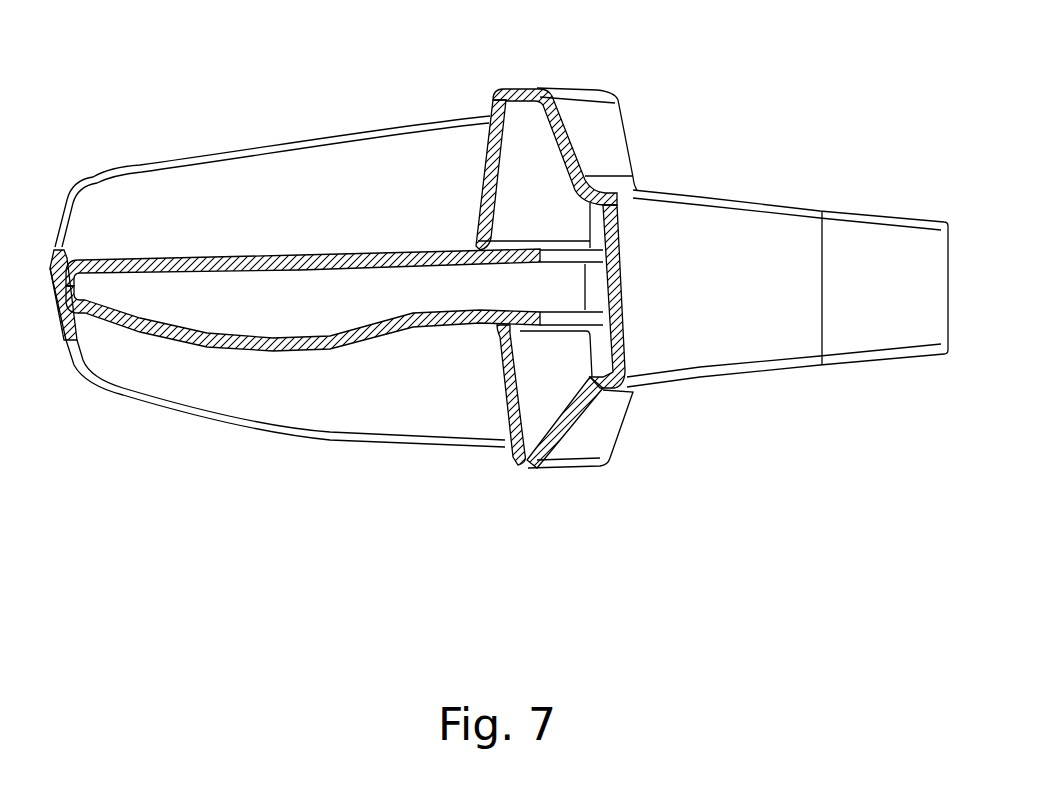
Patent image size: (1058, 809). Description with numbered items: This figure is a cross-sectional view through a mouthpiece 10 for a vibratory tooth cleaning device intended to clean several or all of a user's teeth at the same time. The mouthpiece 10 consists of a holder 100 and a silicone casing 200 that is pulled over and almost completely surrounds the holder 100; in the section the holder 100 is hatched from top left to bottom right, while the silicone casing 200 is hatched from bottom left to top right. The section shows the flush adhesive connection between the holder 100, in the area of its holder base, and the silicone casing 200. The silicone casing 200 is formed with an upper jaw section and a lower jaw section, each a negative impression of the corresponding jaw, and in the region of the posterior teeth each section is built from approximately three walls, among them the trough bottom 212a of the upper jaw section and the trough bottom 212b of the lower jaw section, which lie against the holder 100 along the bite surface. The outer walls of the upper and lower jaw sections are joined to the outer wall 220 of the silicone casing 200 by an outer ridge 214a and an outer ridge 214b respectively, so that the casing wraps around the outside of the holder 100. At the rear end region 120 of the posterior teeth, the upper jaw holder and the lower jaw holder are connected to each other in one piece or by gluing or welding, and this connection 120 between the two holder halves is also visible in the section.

The mouthpiece 10 is at (762, 53).
The holder 100 is at (517, 326).
The rear end region 120 is at (75, 304).
The silicone casing 200 is at (561, 114).
The trough bottom of the upper jaw section 212a is at (235, 262).
The trough bottom of the lower jaw section 212b is at (257, 341).
The outer ridge of the upper jaw section 214a is at (498, 88).
The outer ridge of the lower jaw section 214b is at (516, 467).
The outer wall of the silicone casing 220 is at (625, 244).